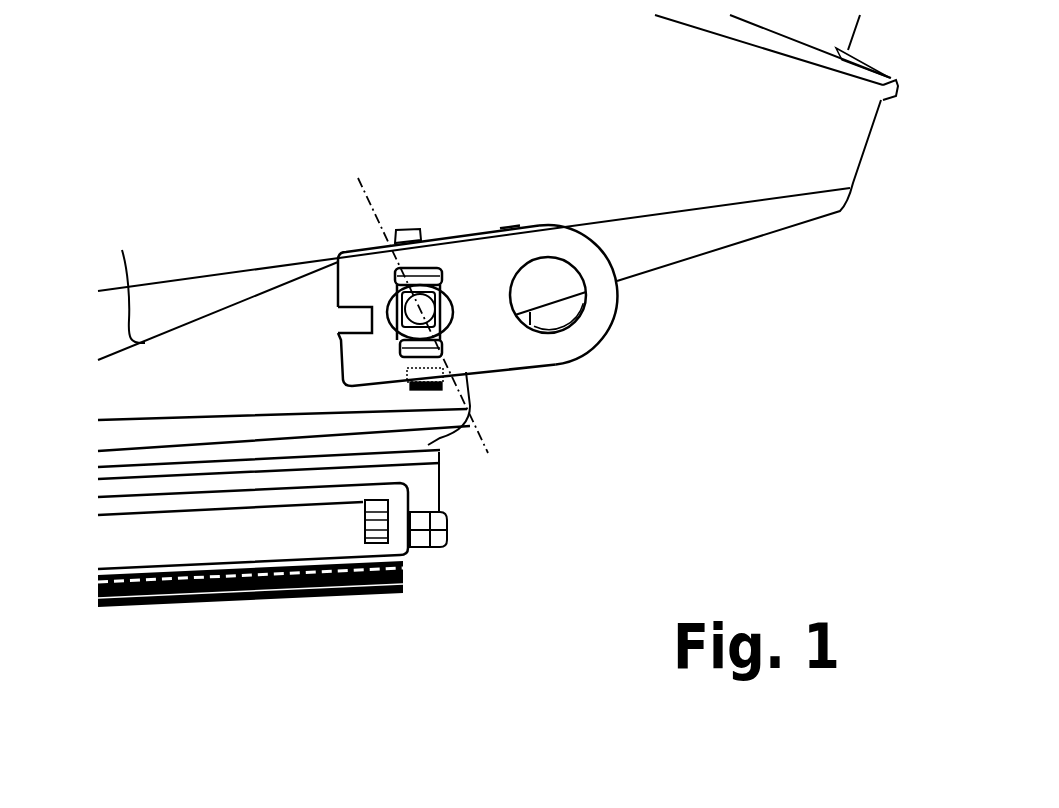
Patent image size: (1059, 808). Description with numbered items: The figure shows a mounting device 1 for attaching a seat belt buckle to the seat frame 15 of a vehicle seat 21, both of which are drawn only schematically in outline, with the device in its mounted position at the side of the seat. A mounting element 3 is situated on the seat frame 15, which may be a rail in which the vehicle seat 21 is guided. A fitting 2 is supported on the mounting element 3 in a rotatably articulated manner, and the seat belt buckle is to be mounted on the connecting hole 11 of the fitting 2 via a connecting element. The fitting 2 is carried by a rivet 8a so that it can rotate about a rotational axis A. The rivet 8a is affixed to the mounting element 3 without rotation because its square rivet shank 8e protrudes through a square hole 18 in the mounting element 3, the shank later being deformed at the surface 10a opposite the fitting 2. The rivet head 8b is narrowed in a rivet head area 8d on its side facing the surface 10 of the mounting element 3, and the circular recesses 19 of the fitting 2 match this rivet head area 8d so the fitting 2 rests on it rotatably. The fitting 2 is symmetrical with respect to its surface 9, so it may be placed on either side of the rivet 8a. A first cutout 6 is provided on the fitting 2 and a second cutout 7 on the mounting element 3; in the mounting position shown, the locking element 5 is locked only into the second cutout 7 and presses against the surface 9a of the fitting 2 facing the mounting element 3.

The mounting device 1 is at (262, 168).
The fitting 2 is at (522, 345).
The mounting element 3 is at (109, 381).
The locking element 5 is at (422, 384).
The first cutout 6 is at (344, 314).
The second cutout 7 is at (400, 363).
The rivet 8a is at (447, 352).
The rivet head 8b is at (420, 260).
The rivet head area 8d is at (377, 282).
The rivet shank 8e is at (439, 280).
The surface 9 is at (444, 244).
The surface 9a is at (497, 222).
The surface 10 is at (218, 323).
The surface 10a is at (102, 281).
The connecting hole 11 is at (554, 300).
The seat frame 15 is at (254, 522).
The square hole 18 is at (380, 302).
The circular recesses 19 is at (335, 345).
The vehicle seat 21 is at (752, 175).
The rotational axis A is at (480, 445).